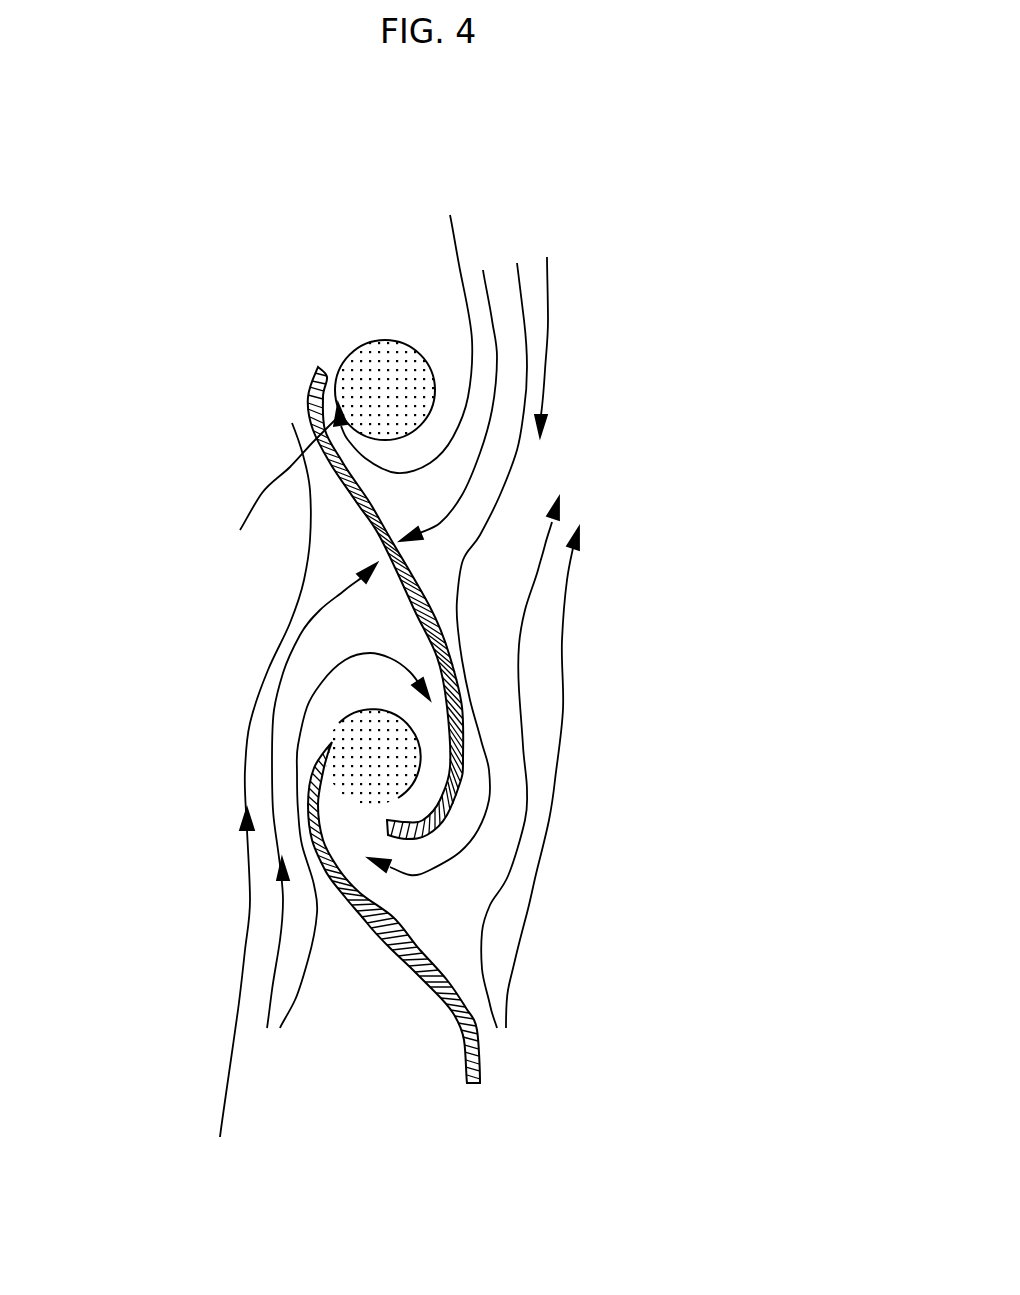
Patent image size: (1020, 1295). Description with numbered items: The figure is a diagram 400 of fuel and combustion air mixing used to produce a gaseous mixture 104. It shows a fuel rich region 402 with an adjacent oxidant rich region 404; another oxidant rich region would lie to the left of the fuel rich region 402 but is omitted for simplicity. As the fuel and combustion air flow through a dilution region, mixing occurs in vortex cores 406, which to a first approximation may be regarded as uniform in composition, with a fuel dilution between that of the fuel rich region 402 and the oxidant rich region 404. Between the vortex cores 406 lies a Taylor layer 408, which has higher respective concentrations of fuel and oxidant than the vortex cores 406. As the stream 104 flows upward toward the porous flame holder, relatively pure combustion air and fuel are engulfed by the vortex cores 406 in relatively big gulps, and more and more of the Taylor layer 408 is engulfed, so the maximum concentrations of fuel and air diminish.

The diagram 400 is at (754, 130).
The gaseous mixture 104 is at (145, 208).
The fuel rich region 402 is at (362, 1160).
The oxidant rich region 404 is at (747, 1160).
The vortex cores 406 is at (337, 720).
The Taylor layer 408 is at (447, 618).